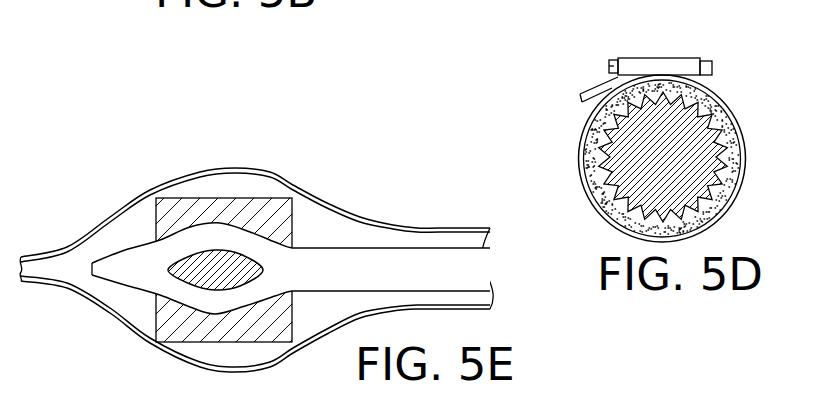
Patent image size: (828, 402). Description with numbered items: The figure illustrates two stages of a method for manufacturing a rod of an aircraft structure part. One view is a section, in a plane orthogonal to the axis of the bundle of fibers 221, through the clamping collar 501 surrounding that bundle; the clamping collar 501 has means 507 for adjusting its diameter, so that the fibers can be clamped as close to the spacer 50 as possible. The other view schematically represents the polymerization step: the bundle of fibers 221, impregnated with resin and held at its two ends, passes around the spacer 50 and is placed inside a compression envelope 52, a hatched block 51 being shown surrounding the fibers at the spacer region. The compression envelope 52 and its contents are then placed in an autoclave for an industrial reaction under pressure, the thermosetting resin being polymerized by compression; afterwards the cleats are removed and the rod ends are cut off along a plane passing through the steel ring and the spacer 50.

In FIG. 5E, the spacer 50 is at (200, 255).
In FIG. 5D, the spacer 50 is at (620, 147).
In FIG. 5E, the hatched support block 51 is at (256, 212).
In FIG. 5E, the compression envelope 52 is at (317, 197).
In FIG. 5E, the bundle of fibers 221 is at (372, 270).
In FIG. 5D, the bundle of fibers 221 is at (722, 182).
In FIG. 5D, the clamping collar 501 is at (733, 116).
In FIG. 5D, the means for adjusting its diameter 507 is at (645, 63).